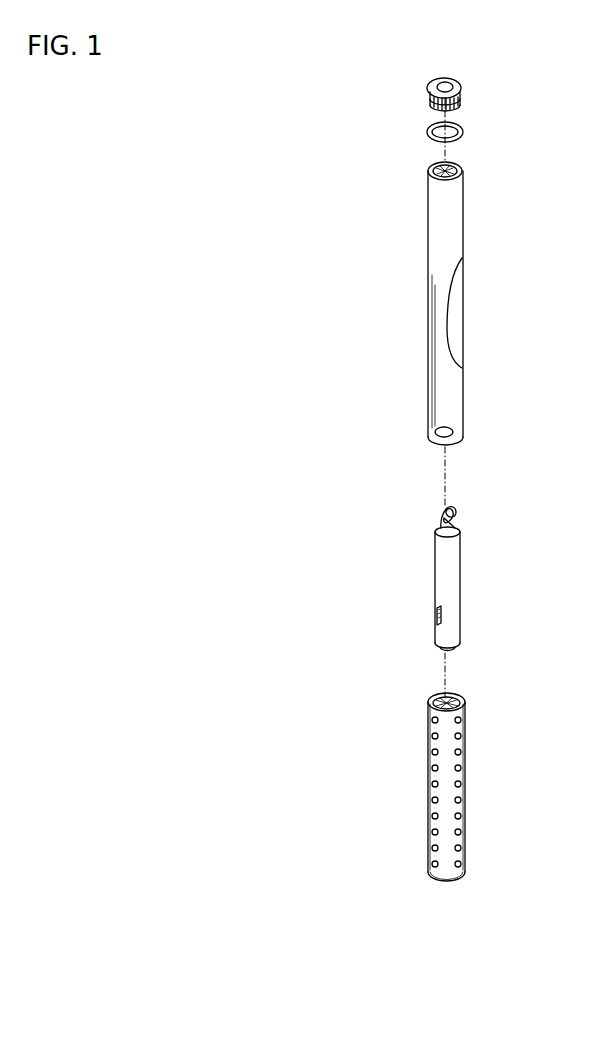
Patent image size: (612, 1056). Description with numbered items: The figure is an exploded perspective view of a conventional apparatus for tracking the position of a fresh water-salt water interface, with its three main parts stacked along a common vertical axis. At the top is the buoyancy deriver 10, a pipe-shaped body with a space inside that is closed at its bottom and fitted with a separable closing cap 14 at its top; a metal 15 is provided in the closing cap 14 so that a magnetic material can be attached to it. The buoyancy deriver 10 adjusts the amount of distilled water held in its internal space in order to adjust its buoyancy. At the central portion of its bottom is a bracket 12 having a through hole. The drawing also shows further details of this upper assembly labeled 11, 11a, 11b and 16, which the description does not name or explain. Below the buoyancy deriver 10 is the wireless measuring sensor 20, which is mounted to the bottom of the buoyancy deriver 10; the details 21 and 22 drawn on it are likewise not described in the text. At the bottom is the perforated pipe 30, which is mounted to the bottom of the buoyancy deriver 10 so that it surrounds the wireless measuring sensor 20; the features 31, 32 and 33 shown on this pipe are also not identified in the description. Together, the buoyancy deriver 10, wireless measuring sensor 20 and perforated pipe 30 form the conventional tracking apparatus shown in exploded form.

The buoyancy deriver 10 is at (372, 213).
The tube body 11 is at (457, 240).
The opening of tube 11a is at (455, 296).
The upper end of tube 11b is at (462, 171).
The bracket 12 is at (447, 447).
The closing cap 14 is at (459, 89).
The metal 15 is at (451, 84).
The ring / washer 16 is at (463, 132).
The wireless measuring sensor 20 is at (390, 554).
The battery body 21 is at (460, 535).
The battery terminal 22 is at (452, 520).
The perforated pipe 30 is at (385, 750).
The holder body 31 is at (466, 770).
The holes 32 is at (459, 790).
The holder upper end 33 is at (455, 712).